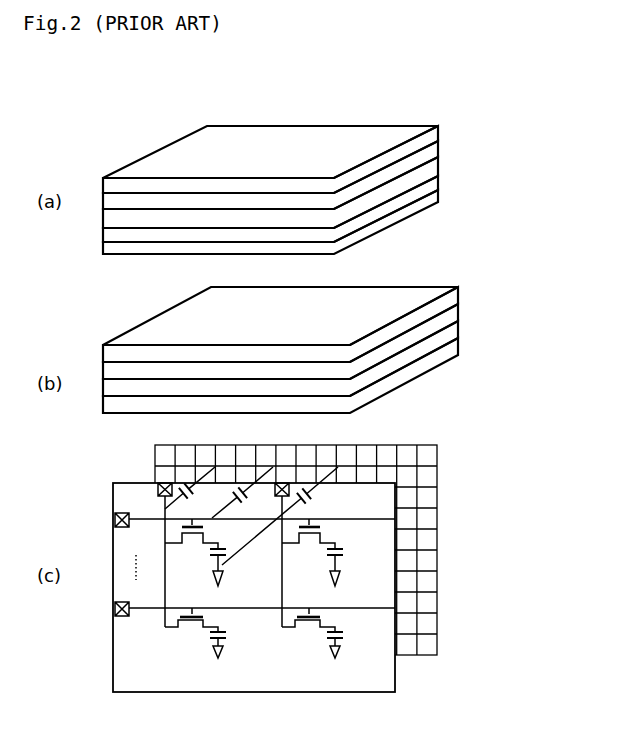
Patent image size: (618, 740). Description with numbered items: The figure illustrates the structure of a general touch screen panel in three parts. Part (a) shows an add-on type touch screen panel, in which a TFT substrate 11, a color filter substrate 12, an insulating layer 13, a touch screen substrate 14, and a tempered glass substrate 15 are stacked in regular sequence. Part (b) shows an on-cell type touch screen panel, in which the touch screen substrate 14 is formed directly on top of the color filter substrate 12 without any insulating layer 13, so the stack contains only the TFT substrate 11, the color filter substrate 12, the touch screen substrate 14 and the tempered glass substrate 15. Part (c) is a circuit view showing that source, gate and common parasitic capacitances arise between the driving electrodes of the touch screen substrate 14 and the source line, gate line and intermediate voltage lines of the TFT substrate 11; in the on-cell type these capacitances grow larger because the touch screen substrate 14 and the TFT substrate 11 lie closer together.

The TFT substrate 11 is at (440, 197).
The color filter substrate 12 is at (440, 183).
The insulating layer 13 is at (440, 167).
The touch screen substrate 14 is at (440, 148).
The tempered glass substrate 15 is at (440, 133).